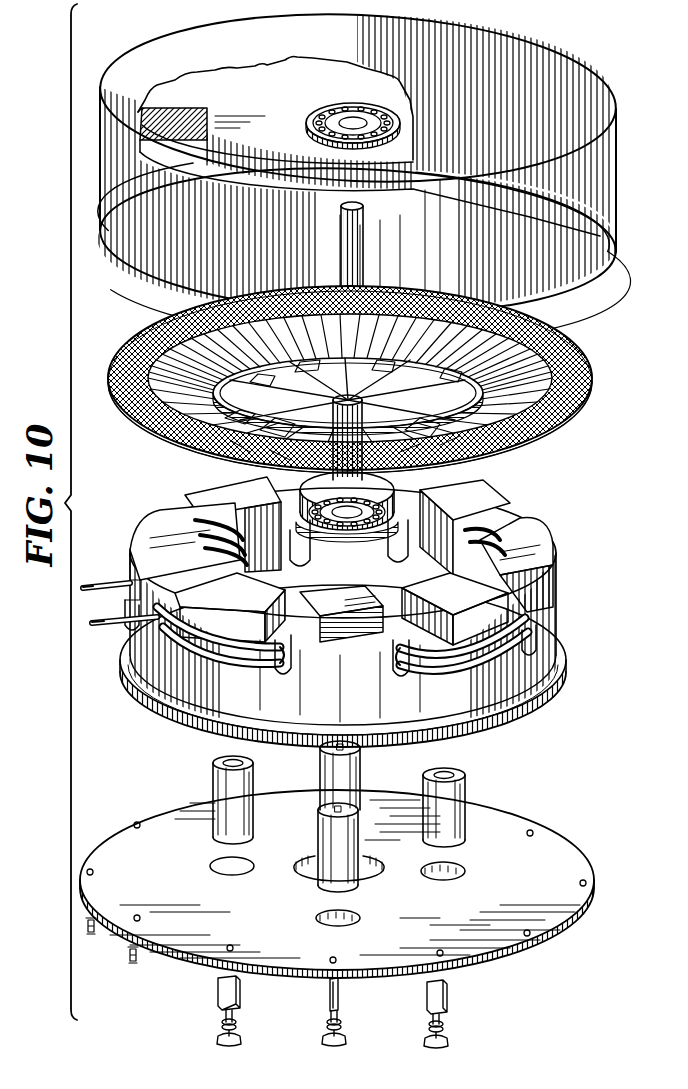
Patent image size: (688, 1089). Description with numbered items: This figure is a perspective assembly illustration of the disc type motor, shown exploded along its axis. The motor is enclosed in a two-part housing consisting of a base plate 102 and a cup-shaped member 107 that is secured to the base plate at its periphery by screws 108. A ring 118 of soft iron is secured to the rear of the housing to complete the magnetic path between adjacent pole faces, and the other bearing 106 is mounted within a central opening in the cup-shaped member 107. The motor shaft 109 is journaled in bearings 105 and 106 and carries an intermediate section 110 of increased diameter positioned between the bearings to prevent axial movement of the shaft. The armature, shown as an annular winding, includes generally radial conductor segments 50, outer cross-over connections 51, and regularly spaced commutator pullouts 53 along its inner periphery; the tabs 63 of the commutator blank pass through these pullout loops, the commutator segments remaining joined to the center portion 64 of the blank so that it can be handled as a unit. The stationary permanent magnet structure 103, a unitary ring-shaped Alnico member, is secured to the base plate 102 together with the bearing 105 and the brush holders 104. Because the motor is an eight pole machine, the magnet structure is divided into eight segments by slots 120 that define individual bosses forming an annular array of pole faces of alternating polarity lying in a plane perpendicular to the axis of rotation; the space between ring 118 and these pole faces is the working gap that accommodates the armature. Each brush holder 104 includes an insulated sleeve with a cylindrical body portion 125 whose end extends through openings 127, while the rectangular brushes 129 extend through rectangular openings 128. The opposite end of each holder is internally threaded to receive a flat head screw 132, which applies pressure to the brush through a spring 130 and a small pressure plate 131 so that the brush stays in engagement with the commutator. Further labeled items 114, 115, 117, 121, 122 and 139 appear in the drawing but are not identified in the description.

The cup-shaped member 107 is at (271, 50).
The bearing 106 is at (346, 100).
The ring of soft iron 118 is at (291, 215).
The motor shaft 109 is at (345, 250).
The rotor windings 117 is at (152, 310).
The rotor assembly 114 is at (356, 384).
The radial conductor segments 50 is at (537, 358).
The outer cross-over connections 51 is at (588, 380).
The inner ring 115 is at (172, 438).
The commutator pullouts 53 is at (215, 450).
The intermediate section of increased diameter 110 is at (302, 476).
The center portion of the commutator blank 64 is at (432, 462).
The tabs 63 is at (482, 456).
The south pole magnets 122 is at (480, 500).
The north pole magnets 121 is at (365, 590).
The bearing 105 is at (352, 530).
The stator coils 139 is at (218, 648).
The slots 120 is at (395, 646).
The stationary permanent magnet structure 103 is at (340, 612).
The rectangular openings 128 is at (222, 795).
The cylindrical body portion 125 is at (327, 794).
The brush holders 104 is at (308, 838).
The base plate 102 is at (155, 861).
The openings 127 is at (228, 860).
The screws 108 is at (120, 952).
The brushes 129 is at (225, 990).
The spring 130 is at (226, 1016).
The pressure plate 131 is at (237, 1023).
The flat head screw 132 is at (297, 1041).